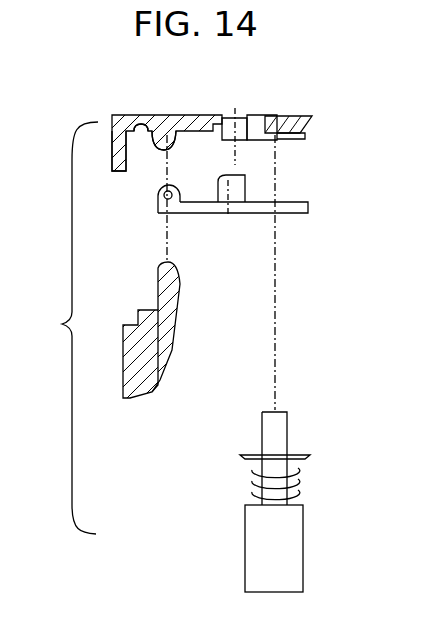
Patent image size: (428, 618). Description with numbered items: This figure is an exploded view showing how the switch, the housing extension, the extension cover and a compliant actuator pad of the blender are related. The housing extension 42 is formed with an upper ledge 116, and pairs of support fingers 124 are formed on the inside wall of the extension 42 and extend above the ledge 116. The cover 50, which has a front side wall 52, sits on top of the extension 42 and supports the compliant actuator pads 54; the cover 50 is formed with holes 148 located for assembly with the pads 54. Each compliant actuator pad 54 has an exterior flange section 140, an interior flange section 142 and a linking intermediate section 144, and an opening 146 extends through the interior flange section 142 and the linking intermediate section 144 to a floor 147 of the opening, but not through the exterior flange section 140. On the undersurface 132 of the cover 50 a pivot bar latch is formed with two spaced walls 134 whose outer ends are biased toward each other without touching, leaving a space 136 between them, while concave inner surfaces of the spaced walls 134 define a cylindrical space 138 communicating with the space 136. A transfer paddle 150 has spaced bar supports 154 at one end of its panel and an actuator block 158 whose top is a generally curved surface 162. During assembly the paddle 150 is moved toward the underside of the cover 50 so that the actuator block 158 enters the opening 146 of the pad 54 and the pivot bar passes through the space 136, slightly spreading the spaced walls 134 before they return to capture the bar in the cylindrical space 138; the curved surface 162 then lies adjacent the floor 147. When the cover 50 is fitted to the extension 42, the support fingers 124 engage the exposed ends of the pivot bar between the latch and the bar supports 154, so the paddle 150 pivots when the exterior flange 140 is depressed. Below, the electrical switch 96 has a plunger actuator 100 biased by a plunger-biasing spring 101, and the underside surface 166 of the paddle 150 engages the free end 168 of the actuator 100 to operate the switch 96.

The housing extension 42 is at (133, 402).
The cover 50 is at (111, 157).
The front side wall 52 is at (112, 130).
The compliant actuator pad 54 is at (255, 104).
The electrical switch 96 is at (304, 548).
The plunger actuator 100 is at (286, 438).
The plunger-biasing spring 101 is at (300, 488).
The upper ledge 116 is at (137, 318).
The support fingers 124 is at (180, 283).
The undersurface 132 is at (112, 118).
The spaced walls 134 is at (112, 160).
The space 136 is at (158, 144).
The cylindrical space 138 is at (165, 128).
The exterior flange section 140 is at (268, 118).
The interior flange section 142 is at (314, 126).
The linking intermediate section 144 is at (298, 118).
The opening 146 is at (234, 155).
The floor 147 is at (235, 108).
The holes 148 is at (225, 118).
The transfer paddle 150 is at (309, 207).
The bar supports 154 is at (156, 210).
The actuator block 158 is at (243, 207).
The curved surface 162 is at (246, 182).
The underside surface 166 is at (290, 214).
The free end 168 is at (281, 411).